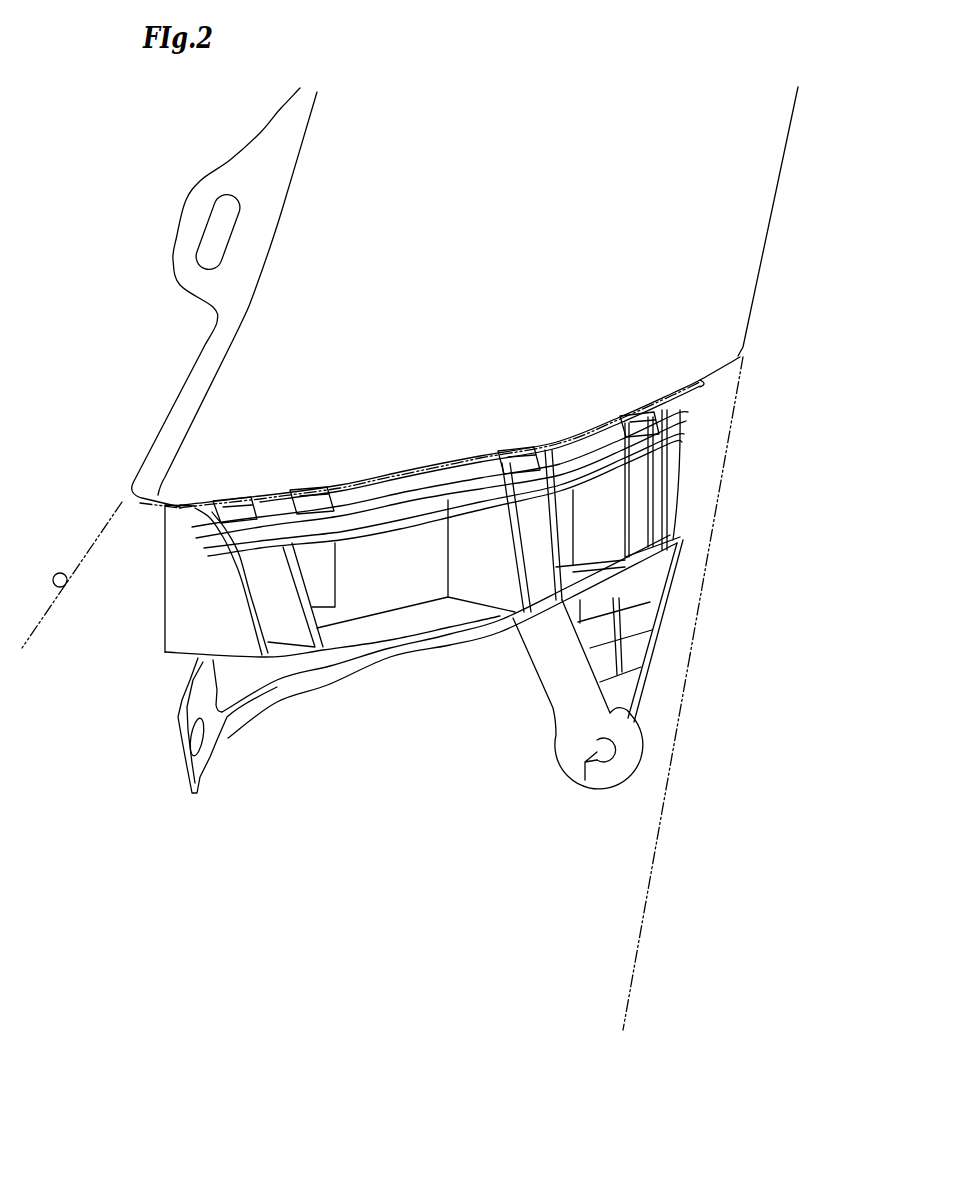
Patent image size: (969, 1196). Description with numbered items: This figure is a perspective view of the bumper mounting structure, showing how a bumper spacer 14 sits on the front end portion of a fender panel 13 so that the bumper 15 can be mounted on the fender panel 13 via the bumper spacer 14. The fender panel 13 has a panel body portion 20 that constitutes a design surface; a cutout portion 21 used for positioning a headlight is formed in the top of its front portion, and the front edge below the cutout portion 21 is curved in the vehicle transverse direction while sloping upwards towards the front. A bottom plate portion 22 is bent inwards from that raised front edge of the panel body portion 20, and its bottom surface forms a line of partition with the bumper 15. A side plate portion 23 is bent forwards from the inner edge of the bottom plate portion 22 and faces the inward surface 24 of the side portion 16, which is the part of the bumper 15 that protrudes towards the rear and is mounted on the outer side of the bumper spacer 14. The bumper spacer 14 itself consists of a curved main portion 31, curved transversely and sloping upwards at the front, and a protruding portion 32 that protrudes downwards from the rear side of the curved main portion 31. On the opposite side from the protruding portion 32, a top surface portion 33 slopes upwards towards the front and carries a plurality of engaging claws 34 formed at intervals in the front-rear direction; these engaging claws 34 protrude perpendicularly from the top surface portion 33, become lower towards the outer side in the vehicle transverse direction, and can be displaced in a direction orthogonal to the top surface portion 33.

The fender panel 13 is at (765, 322).
The bumper spacer 14 is at (150, 643).
The bumper 15 is at (670, 838).
The side portion 16 is at (718, 513).
The panel body portion 20 is at (727, 228).
The cutout portion 21 is at (175, 398).
The bottom plate portion 22 is at (378, 487).
The side plate portion 23 is at (213, 750).
The inward surface 24 is at (63, 590).
The curved main portion 31 is at (432, 640).
The protruding portion 32 is at (557, 692).
The top surface portion 33 is at (420, 480).
The engaging claw 34 is at (308, 490).